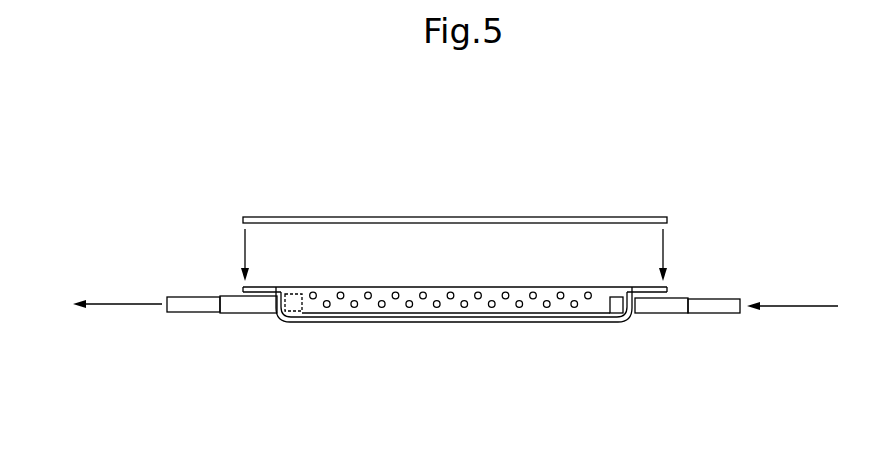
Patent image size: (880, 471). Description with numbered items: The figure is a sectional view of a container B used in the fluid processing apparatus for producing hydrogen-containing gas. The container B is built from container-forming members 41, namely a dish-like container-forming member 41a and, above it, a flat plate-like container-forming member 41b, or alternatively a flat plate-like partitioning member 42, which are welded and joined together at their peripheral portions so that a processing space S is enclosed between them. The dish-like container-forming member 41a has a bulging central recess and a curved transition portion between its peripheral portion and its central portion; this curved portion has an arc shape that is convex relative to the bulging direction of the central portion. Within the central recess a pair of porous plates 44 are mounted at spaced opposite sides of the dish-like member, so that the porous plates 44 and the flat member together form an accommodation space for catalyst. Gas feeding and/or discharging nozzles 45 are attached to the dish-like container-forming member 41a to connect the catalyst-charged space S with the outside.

The container B is at (708, 183).
The container-forming member 41 is at (455, 270).
The dish-like container-forming member 41a is at (455, 325).
The flat plate-like container-forming member 41b is at (455, 170).
The partitioning member 42 is at (436, 217).
The porous plates 44 is at (388, 290).
The gas feeding and/or discharging nozzle 45 is at (203, 302).
The processing space S is at (625, 307).